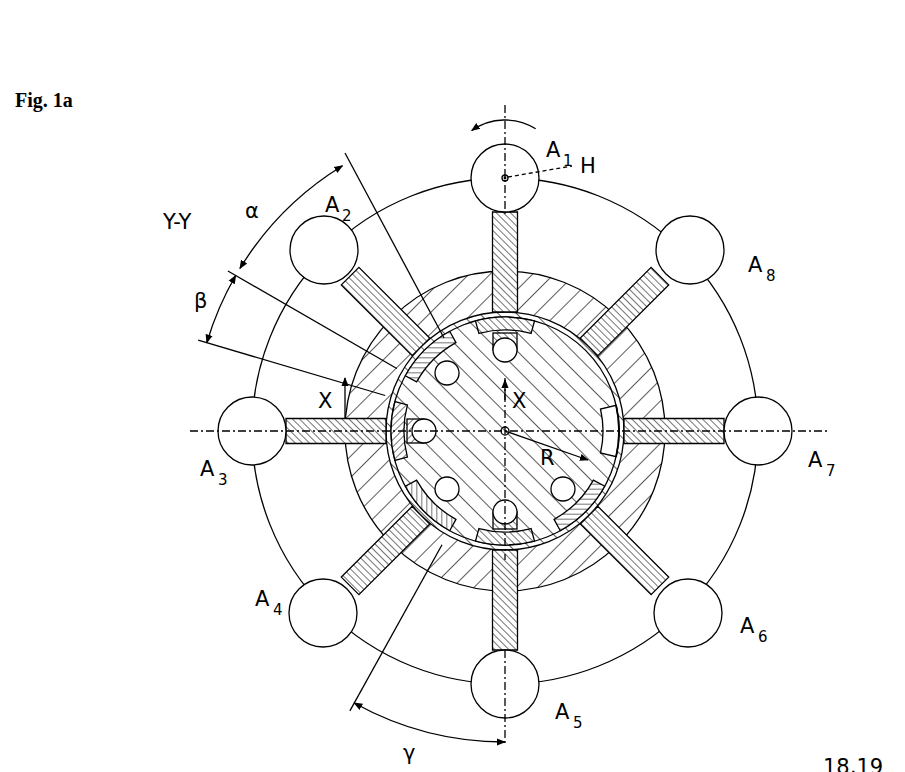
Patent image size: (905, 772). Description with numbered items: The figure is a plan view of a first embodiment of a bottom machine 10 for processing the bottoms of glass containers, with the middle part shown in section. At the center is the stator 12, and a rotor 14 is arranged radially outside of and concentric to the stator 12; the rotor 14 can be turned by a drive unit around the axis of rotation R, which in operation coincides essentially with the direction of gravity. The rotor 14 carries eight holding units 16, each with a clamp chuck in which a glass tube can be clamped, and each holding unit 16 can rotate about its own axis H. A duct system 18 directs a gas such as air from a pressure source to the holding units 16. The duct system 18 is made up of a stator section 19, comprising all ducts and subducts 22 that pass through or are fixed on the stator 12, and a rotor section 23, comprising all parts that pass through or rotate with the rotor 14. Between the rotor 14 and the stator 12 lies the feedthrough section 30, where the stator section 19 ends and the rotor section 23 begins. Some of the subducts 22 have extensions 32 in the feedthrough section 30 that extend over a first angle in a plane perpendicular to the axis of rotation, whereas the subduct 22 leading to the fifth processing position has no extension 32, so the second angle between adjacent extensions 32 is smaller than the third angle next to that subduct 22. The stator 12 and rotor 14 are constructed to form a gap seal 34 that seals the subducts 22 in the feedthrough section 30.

The bottom machine 10 is at (285, 85).
The stator 12 is at (576, 401).
The rotor 14 is at (648, 512).
The holding unit 16 is at (505, 431).
The duct system 18 is at (549, 262).
The stator section 19 is at (620, 415).
The subduct 22 is at (518, 235).
The rotor section 23 is at (718, 407).
The feedthrough section 30 is at (617, 365).
The extension 32 is at (488, 312).
The gap seal 34 is at (623, 460).